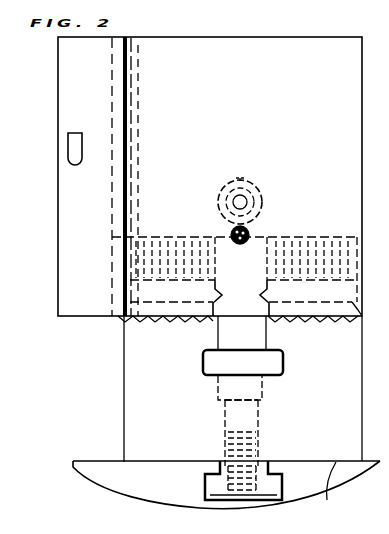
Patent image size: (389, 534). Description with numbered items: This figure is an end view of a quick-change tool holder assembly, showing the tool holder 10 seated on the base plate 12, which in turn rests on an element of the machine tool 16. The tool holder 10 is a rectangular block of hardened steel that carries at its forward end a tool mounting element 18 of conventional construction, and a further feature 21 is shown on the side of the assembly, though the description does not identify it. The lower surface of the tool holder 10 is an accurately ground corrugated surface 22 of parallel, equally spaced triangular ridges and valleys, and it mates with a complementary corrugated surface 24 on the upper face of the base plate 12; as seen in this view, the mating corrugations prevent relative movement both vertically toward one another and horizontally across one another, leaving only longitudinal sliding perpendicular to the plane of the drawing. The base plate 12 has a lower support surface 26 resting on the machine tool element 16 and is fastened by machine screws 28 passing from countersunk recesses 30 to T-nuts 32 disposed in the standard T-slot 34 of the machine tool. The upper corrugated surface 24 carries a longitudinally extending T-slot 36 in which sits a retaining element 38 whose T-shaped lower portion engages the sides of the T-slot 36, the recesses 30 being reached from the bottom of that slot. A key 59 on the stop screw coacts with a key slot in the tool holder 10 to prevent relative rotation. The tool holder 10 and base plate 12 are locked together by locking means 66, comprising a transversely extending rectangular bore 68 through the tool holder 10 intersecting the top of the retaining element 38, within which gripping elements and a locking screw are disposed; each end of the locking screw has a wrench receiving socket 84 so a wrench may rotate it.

The tool holder 10 is at (239, 44).
The base plate 12 is at (124, 382).
The machine tool element 16 is at (112, 478).
The tool mounting element 18 is at (60, 218).
The handle 21 is at (68, 150).
The corrugated surface 22 is at (145, 321).
The complementary corrugated surface 24 is at (360, 312).
The lower support surface 26 is at (336, 488).
The machine screws 28 is at (259, 429).
The countersunk recesses 30 is at (262, 390).
The T-nuts 32 is at (204, 503).
The T-slot 34 is at (270, 497).
The T-slot 36 is at (283, 358).
The retaining element 38 is at (242, 334).
The key 59 is at (246, 182).
The locking means 66 is at (177, 234).
The rectangular bore 68 is at (352, 297).
The wrench receiving socket 84 is at (112, 255).